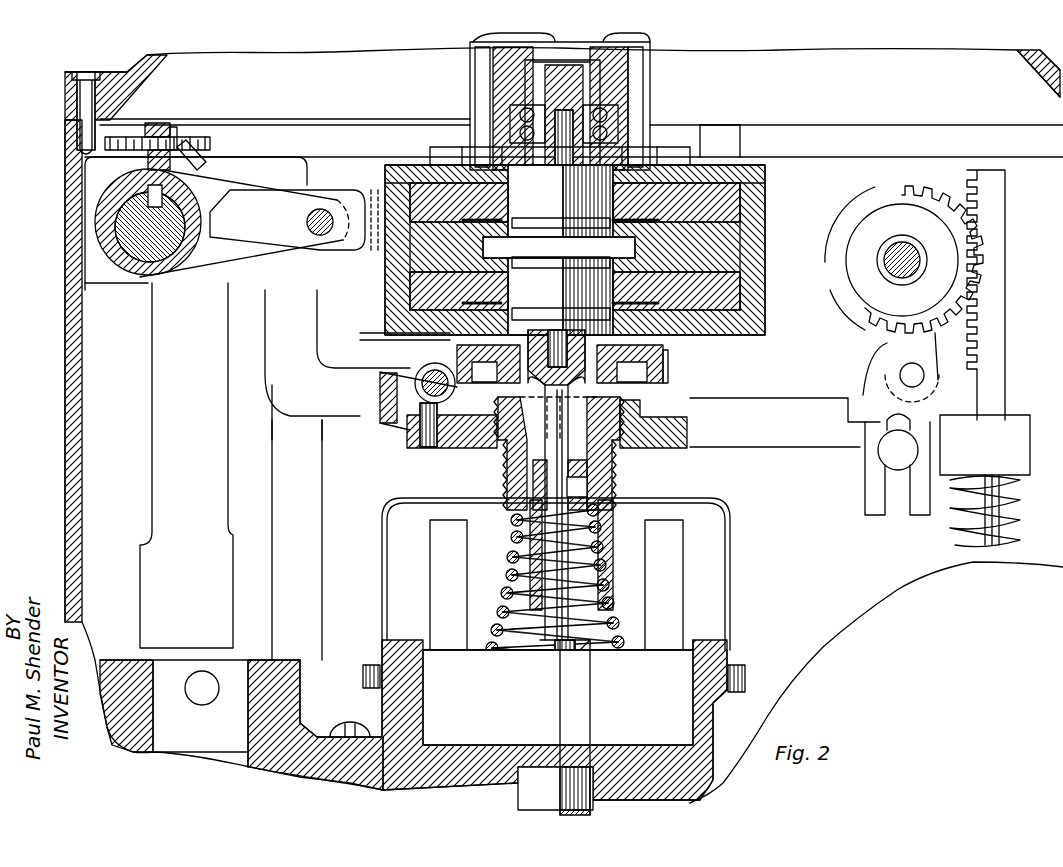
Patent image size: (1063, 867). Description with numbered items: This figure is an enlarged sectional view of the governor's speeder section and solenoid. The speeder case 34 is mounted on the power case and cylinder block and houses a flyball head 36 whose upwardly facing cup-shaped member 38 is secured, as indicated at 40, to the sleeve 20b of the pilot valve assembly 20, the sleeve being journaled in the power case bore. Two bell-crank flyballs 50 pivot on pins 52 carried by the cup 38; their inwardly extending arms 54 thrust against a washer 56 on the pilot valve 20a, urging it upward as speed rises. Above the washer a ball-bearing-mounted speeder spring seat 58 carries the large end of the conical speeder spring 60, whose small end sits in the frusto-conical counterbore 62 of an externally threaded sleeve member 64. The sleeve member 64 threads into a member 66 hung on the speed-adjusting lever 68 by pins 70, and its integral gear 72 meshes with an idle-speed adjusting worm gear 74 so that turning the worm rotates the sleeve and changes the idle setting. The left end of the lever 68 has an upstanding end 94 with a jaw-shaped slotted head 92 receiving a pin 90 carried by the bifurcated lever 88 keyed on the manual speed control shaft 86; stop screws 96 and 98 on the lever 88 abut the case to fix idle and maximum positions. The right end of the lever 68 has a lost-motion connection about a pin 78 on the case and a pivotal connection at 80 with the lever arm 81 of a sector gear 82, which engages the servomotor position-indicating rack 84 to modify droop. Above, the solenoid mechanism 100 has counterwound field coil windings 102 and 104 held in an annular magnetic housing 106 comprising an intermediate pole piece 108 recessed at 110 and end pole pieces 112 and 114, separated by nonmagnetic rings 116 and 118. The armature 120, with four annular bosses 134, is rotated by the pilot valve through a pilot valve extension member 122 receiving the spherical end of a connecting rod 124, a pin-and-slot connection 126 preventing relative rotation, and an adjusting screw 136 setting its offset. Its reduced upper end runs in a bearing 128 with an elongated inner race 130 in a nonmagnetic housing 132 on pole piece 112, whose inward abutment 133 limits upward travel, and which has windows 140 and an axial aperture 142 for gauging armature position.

The pilot valve assembly 20 is at (585, 805).
The pilot valve 20a is at (459, 775).
The sleeve 20b is at (525, 800).
The speeder case 34 is at (70, 495).
The flyball head 36 is at (367, 668).
The cup-shaped member 38 is at (715, 710).
The securing connection 40 is at (605, 800).
The flyballs 50 is at (440, 560).
The pins 52 is at (660, 678).
The inwardly extending arms 54 is at (575, 775).
The washer 56 is at (505, 718).
The speeder spring seat 58 is at (500, 680).
The speeder spring 60 is at (625, 600).
The frusto-conical counterbore 62 is at (590, 520).
The externally threaded sleeve member 64 is at (505, 470).
The member 66 is at (670, 425).
The speed-adjusting lever 68 is at (770, 415).
The pins 70 is at (545, 440).
The gear 72 is at (665, 362).
The idle-speed adjusting worm gear 74 is at (430, 368).
The pin 78 is at (885, 455).
The pivotal connection 80 is at (922, 380).
The lever arm 81 is at (885, 350).
The sector gear 82 is at (865, 218).
The servomotor position-indicating rack 84 is at (995, 270).
The speed control shaft 86 is at (160, 272).
The bifurcated lever 88 is at (245, 185).
The pin 90 is at (326, 210).
The jaw-shaped slotted head 92 is at (240, 247).
The upstanding end 94 is at (270, 395).
The idle stop screw 96 is at (135, 140).
The stop screw 98 is at (195, 158).
The solenoid mechanism 100 is at (713, 154).
The field coil winding 102 is at (748, 205).
The field coil winding 104 is at (748, 298).
The annular magnetic housing 106 is at (752, 233).
The intermediate pole piece 108 is at (752, 263).
The recess 110 is at (488, 250).
The end pole piece 112 is at (750, 160).
The end pole piece 114 is at (395, 335).
The nonmagnetic ring 116 is at (632, 229).
The nonmagnetic ring 118 is at (625, 295).
The armature 120 is at (625, 152).
The pilot valve extension member 122 is at (520, 543).
The connecting rod 124 is at (590, 473).
The pin-and-slot connection 126 is at (590, 488).
The bearing 128 is at (612, 110).
The elongated inner race 130 is at (590, 88).
The nonmagnetic housing 132 is at (480, 70).
The abutment 133 is at (620, 40).
The annular bosses 134 is at (558, 228).
The adjusting screw 136 is at (525, 572).
The windows 140 is at (634, 71).
The aperture 142 is at (480, 38).